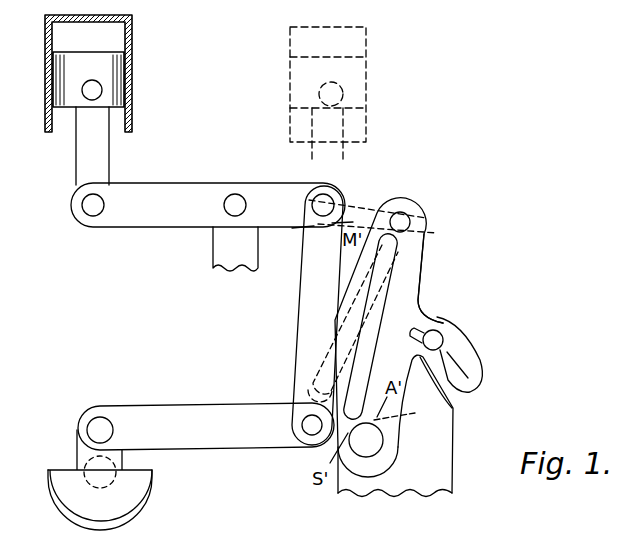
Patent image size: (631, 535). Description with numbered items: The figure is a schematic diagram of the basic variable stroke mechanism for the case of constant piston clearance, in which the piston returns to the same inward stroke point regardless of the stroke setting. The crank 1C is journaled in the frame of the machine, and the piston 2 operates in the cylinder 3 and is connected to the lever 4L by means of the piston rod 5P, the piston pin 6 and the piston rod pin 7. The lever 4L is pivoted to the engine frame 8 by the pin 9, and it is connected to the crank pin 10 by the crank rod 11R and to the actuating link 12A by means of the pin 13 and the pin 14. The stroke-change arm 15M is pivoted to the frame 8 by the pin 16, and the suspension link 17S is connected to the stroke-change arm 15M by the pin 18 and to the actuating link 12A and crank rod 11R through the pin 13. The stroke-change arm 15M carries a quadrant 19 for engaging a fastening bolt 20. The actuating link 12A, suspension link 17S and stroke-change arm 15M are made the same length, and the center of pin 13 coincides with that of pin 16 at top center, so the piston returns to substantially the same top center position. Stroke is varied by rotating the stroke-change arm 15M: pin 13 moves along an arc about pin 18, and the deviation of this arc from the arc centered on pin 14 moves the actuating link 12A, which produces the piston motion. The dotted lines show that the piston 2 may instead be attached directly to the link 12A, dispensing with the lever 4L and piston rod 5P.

The cylinder 3 is at (130, 40).
The piston 2 is at (130, 75).
The piston pin 6 is at (101, 93).
The piston rod 5P is at (110, 163).
The lever 4L is at (190, 184).
The piston rod pin 7 is at (80, 220).
The pin 9 is at (241, 196).
The pin 14 is at (340, 203).
The actuating link 12A is at (303, 272).
The pin 13 is at (305, 443).
The crank rod 11R is at (185, 453).
The crank pin 10 is at (104, 418).
The crank 1C is at (77, 455).
The engine frame 8 is at (218, 255).
The pin 18 is at (411, 220).
The stroke-change arm 15M is at (420, 303).
The suspension link 17S is at (400, 268).
The pin 16 is at (372, 457).
The fastening bolt 20 is at (438, 340).
The quadrant 19 is at (482, 368).